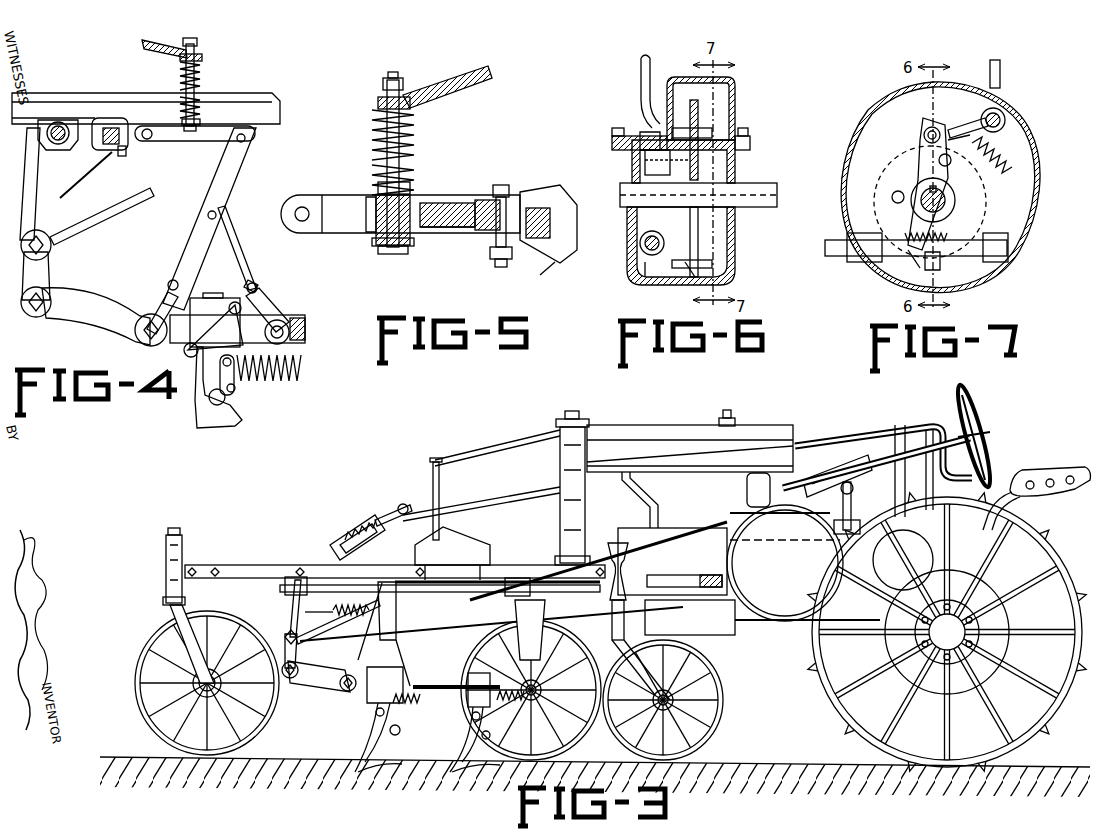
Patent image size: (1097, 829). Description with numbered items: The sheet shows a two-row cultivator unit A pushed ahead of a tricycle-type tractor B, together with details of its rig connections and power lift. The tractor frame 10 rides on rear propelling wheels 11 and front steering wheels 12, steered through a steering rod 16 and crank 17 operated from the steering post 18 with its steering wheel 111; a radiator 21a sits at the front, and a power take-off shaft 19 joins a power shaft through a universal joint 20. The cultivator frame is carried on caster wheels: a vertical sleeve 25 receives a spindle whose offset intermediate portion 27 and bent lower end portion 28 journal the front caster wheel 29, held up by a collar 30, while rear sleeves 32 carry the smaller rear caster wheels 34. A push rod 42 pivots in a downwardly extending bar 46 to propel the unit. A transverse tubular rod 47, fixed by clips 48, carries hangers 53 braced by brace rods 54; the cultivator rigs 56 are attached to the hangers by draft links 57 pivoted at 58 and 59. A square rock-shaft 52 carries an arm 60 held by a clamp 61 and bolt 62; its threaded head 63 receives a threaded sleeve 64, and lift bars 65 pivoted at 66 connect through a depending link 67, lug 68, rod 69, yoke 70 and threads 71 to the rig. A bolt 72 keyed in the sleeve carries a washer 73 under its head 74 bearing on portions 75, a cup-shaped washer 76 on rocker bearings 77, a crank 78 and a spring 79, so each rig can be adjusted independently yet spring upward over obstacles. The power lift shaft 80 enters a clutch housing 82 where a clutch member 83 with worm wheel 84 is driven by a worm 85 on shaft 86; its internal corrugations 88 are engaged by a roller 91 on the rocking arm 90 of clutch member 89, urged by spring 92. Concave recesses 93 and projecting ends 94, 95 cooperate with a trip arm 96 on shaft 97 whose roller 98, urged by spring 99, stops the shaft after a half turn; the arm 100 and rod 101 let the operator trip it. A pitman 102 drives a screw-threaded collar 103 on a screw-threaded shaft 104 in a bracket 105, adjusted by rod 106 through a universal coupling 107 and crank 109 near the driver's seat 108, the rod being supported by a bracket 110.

In FIG. 3, the tractor frame 10 is at (722, 636).
In FIG. 3, the propelling wheels 11 is at (818, 679).
In FIG. 3, the steering wheels 12 is at (478, 655).
In FIG. 3, the steering rod 16 is at (690, 527).
In FIG. 3, the crank 17 is at (852, 497).
In FIG. 3, the steering post 18 is at (914, 471).
In FIG. 3, the power take-off shaft 19 is at (712, 615).
In FIG. 3, the universal joint 20 is at (690, 574).
In FIG. 3, the radiator 21a is at (563, 437).
In FIG. 3, the vertical sleeve 25 is at (165, 561).
In FIG. 3, the intermediate portion 27 is at (178, 640).
In FIG. 3, the lower end portion 28 is at (165, 725).
In FIG. 3, the caster wheel 29 is at (262, 725).
In FIG. 3, the collar 30 is at (186, 590).
In FIG. 3, the sleeves 32 is at (628, 558).
In FIG. 3, the rear caster wheels 34 is at (724, 731).
In FIG. 3, the push rod 42 is at (491, 622).
In FIG. 3, the downwardly extending bars 46 is at (368, 652).
In FIG. 4, the tubular rod 47 is at (52, 118).
In FIG. 4, the clips 48 is at (60, 147).
In FIG. 3, the clips 48 is at (290, 600).
In FIG. 4, the rock-shaft 52 is at (110, 124).
In FIG. 5, the rock-shaft 52 is at (545, 205).
In FIG. 3, the rock-shaft 52 is at (298, 576).
In FIG. 4, the hangers 53 is at (45, 265).
In FIG. 3, the hangers 53 is at (287, 645).
In FIG. 4, the brace rods 54 is at (118, 228).
In FIG. 3, the brace rods 54 is at (330, 633).
In FIG. 4, the cultivator rigs 56 is at (300, 330).
In FIG. 3, the cultivator rigs 56 is at (455, 686).
In FIG. 4, the draft links 57 is at (90, 312).
In FIG. 3, the draft links 57 is at (318, 690).
In FIG. 4, the pivot 58 is at (146, 334).
In FIG. 3, the pivot 58 is at (348, 692).
In FIG. 4, the pivot 59 is at (36, 318).
In FIG. 3, the pivot 59 is at (290, 680).
In FIG. 5, the arm 60 is at (437, 212).
In FIG. 4, the clamp 61 is at (120, 148).
In FIG. 5, the clamp 61 is at (530, 256).
In FIG. 4, the bolt 62 is at (126, 162).
In FIG. 5, the bolt 62 is at (500, 268).
In FIG. 5, the screw-threaded head 63 is at (370, 223).
In FIG. 5, the threaded sleeve 64 is at (430, 238).
In FIG. 4, the lift bars 65 is at (163, 142).
In FIG. 5, the lift bars 65 is at (348, 199).
In FIG. 4, the pivots 66 is at (147, 140).
In FIG. 5, the pivots 66 is at (480, 200).
In FIG. 4, the depending link 67 is at (228, 188).
In FIG. 4, the lug 68 is at (162, 298).
In FIG. 4, the rod 69 is at (233, 240).
In FIG. 4, the yoke 70 is at (270, 306).
In FIG. 4, the threads 71 is at (254, 285).
In FIG. 4, the bolt 72 is at (185, 78).
In FIG. 5, the bolt 72 is at (393, 148).
In FIG. 5, the washer 73 is at (380, 244).
In FIG. 5, the head 74 is at (402, 243).
In FIG. 4, the portions 75 is at (188, 132).
In FIG. 5, the portions 75 is at (392, 250).
In FIG. 4, the cup-shaped washer 76 is at (214, 127).
In FIG. 5, the cup-shaped washer 76 is at (416, 182).
In FIG. 4, the rocker bearings 77 is at (213, 115).
In FIG. 5, the rocker bearings 77 is at (365, 176).
In FIG. 4, the crank 78 is at (150, 45).
In FIG. 5, the crank 78 is at (478, 90).
In FIG. 4, the spring 79 is at (204, 66).
In FIG. 5, the spring 79 is at (418, 122).
In FIG. 6, the shaft 80 is at (757, 194).
In FIG. 7, the shaft 80 is at (925, 201).
In FIG. 6, the clutch housing 82 is at (735, 246).
In FIG. 7, the clutch housing 82 is at (1018, 240).
In FIG. 6, the clutch member 83 is at (660, 128).
In FIG. 6, the worm wheel 84 is at (627, 178).
In FIG. 6, the worm 85 is at (640, 241).
In FIG. 7, the worm 85 is at (962, 262).
In FIG. 6, the shaft 86 is at (645, 276).
In FIG. 7, the shaft 86 is at (836, 258).
In FIG. 7, the internal corrugations 88 is at (880, 226).
In FIG. 6, the clutch member 89 is at (735, 166).
In FIG. 7, the clutch member 89 is at (972, 216).
In FIG. 6, the rocking arm 90 is at (725, 268).
In FIG. 7, the rocking arm 90 is at (912, 176).
In FIG. 6, the roller 91 is at (645, 157).
In FIG. 7, the roller 91 is at (957, 146).
In FIG. 6, the spring 92 is at (715, 222).
In FIG. 7, the spring 92 is at (1000, 258).
In FIG. 6, the concave recesses 93 is at (695, 280).
In FIG. 7, the concave recesses 93 is at (936, 264).
In FIG. 7, the projecting end 94 is at (946, 131).
In FIG. 7, the projecting end 95 is at (920, 266).
In FIG. 6, the trip arm 96 is at (740, 93).
In FIG. 7, the trip arm 96 is at (968, 123).
In FIG. 7, the shaft 97 is at (1006, 119).
In FIG. 6, the roller 98 is at (735, 119).
In FIG. 7, the roller 98 is at (926, 131).
In FIG. 7, the spring 99 is at (1010, 168).
In FIG. 6, the arm 100 is at (646, 74).
In FIG. 7, the arm 100 is at (1002, 70).
In FIG. 3, the rod 101 is at (510, 462).
In FIG. 3, the pitman 102 is at (452, 540).
In FIG. 3, the screw-threaded collar 103 is at (350, 530).
In FIG. 3, the screw-threaded shaft 104 is at (362, 515).
In FIG. 3, the bracket 105 is at (338, 545).
In FIG. 3, the rod 106 is at (496, 500).
In FIG. 3, the universal coupling 107 is at (403, 504).
In FIG. 3, the driver's seat 108 is at (1040, 470).
In FIG. 3, the crank 109 is at (958, 458).
In FIG. 3, the bracket 110 is at (896, 428).
In FIG. 3, the steering wheel 111 is at (978, 399).
In FIG. 3, the cultivator unit A is at (220, 564).
In FIG. 3, the tractor B is at (758, 424).